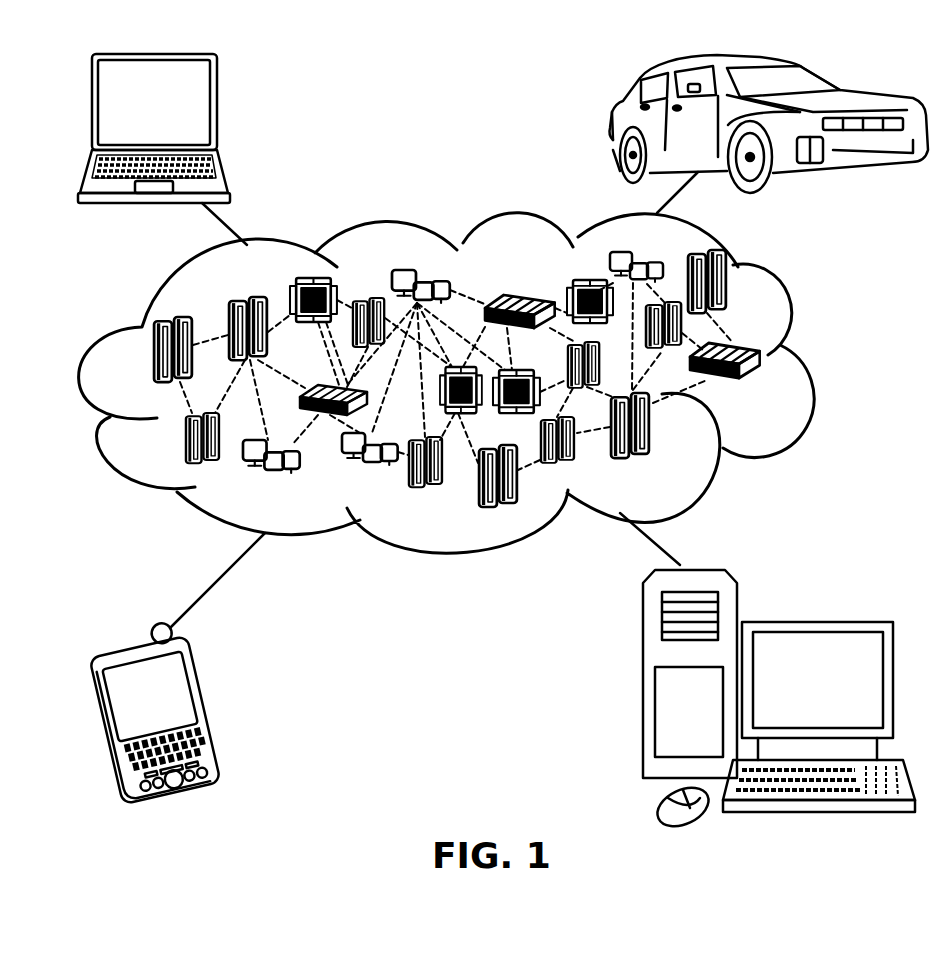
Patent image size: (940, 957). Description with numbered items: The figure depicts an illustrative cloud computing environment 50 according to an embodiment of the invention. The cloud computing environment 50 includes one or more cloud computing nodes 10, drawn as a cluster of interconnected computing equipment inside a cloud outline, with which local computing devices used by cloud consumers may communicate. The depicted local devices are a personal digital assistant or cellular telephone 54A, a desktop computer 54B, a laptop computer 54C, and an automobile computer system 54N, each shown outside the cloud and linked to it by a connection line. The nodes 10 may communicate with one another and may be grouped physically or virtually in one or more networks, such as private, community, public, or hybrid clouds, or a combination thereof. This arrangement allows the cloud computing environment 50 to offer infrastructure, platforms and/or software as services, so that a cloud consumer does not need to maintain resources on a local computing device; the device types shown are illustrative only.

The cloud computing nodes 10 is at (770, 388).
The cloud computing environment 50 is at (815, 360).
The personal digital assistant or cellular telephone 54A is at (208, 707).
The desktop computer 54B is at (815, 622).
The laptop computer 54C is at (218, 110).
The automobile computer system 54N is at (615, 123).